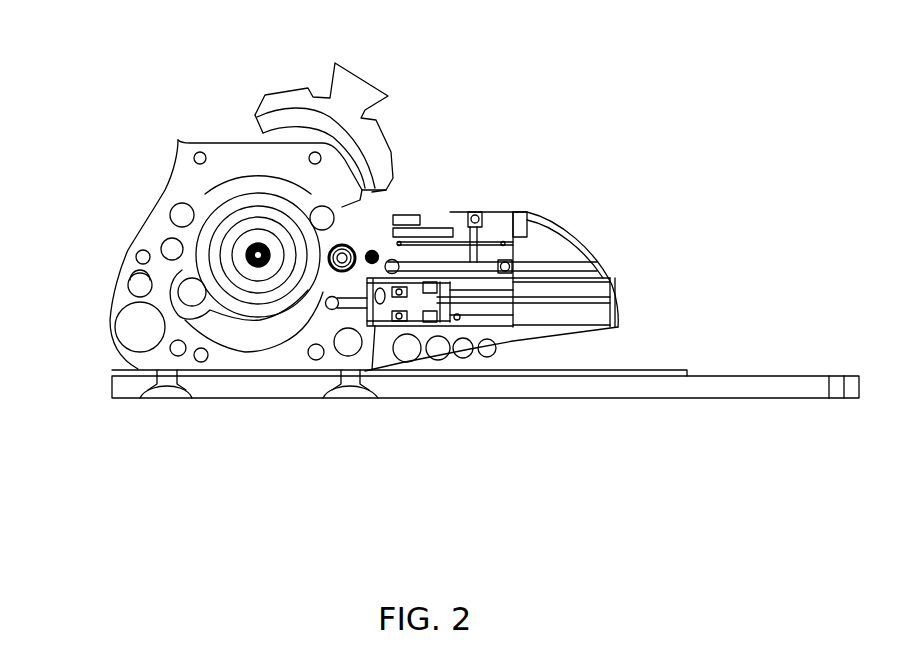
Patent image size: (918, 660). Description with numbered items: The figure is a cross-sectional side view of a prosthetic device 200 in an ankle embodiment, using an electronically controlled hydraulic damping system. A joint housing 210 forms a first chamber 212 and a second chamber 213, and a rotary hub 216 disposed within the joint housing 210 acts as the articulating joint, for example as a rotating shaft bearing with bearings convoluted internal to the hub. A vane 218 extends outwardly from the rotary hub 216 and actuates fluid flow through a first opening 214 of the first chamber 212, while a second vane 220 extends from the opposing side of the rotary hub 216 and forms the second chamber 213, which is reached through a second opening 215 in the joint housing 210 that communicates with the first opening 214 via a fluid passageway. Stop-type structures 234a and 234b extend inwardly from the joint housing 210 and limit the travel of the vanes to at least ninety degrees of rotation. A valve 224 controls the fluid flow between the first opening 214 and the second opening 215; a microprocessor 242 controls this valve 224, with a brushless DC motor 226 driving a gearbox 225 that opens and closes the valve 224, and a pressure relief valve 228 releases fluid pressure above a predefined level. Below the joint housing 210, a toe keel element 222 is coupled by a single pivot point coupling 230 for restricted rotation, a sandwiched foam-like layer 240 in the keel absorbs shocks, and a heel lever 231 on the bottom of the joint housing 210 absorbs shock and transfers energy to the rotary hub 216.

The prosthetic device 200 is at (512, 42).
The joint housing 210 is at (237, 370).
The first chamber 212 is at (210, 325).
The second chamber 213 is at (184, 205).
The first opening 214 is at (323, 293).
The second opening 215 is at (375, 252).
The rotary hub 216 is at (205, 250).
The vane 218 is at (142, 290).
The second vane 220 is at (310, 203).
The toe keel element 222 is at (437, 398).
The valve 224 is at (378, 327).
The gearbox 225 is at (488, 323).
The motor 226 is at (575, 325).
The pressure relief valve 228 is at (452, 211).
The single pivot point coupling 230 is at (158, 399).
The heel lever 231 is at (165, 386).
The stop-type structure 234a is at (232, 256).
The stop-type structure 234b is at (335, 245).
The sandwiched foam-like layer 240 is at (660, 377).
The microprocessor 242 is at (403, 214).